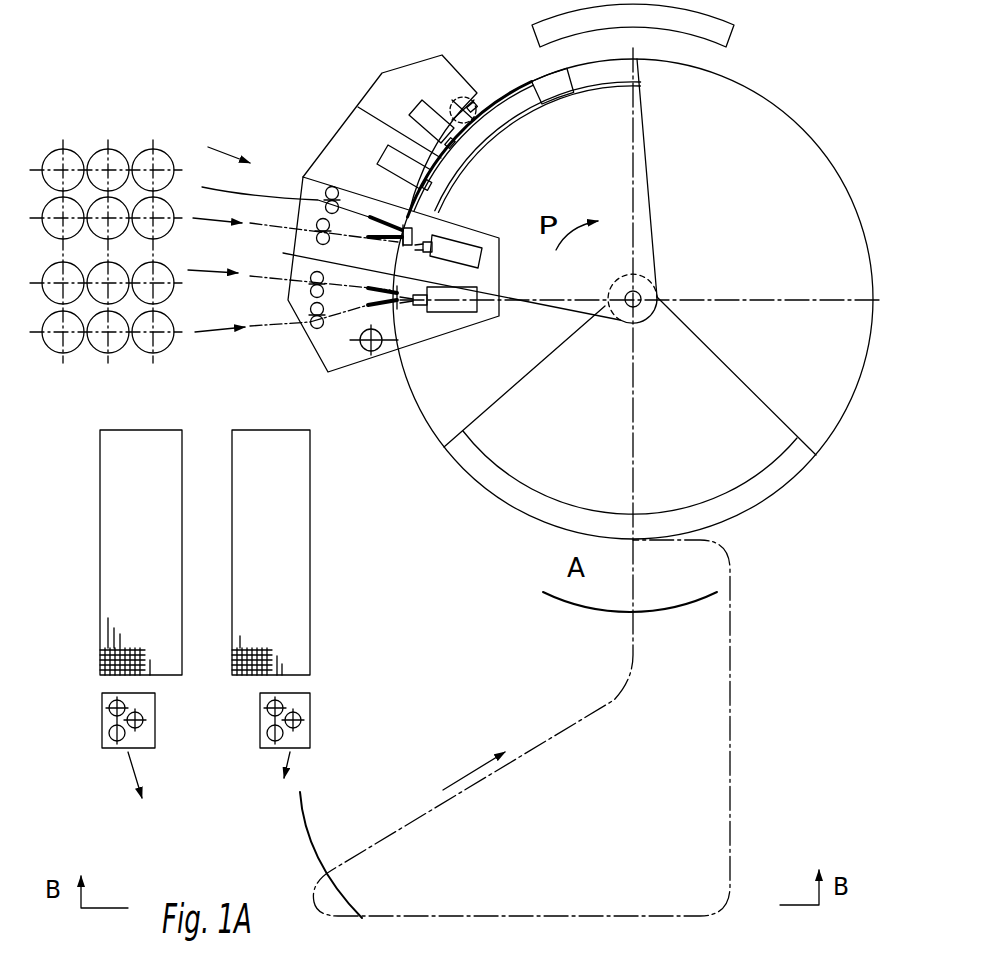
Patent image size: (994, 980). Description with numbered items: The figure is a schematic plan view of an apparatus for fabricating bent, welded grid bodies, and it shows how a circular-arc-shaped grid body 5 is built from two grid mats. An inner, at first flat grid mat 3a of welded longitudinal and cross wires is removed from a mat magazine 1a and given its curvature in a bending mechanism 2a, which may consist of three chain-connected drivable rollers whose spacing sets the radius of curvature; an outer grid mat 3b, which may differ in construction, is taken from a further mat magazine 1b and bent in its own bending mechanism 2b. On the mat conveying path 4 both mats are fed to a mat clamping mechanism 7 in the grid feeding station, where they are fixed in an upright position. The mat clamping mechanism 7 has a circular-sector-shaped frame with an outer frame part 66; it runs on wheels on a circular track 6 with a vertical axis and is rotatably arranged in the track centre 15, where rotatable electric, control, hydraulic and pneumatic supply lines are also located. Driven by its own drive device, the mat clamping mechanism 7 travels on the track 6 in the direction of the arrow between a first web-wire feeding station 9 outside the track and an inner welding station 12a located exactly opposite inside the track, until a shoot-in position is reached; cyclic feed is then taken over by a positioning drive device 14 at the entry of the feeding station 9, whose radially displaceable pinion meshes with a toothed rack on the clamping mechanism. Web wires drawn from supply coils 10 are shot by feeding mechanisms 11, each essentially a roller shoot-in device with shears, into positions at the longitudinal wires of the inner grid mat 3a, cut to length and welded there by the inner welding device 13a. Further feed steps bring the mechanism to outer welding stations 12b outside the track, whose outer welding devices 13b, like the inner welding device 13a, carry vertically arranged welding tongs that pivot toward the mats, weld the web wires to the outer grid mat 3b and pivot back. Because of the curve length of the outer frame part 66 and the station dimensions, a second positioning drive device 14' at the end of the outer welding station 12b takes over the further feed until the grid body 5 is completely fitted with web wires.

The mat magazine 1a is at (294, 570).
The further mat magazine 1b is at (120, 525).
The bending mechanism 2a is at (305, 697).
The bending mechanism 2b is at (105, 745).
The inner grid mat 3a is at (474, 156).
The outer grid mat 3b is at (520, 90).
The mat conveying path 4 is at (520, 760).
The grid body 5 is at (728, 28).
The circular track 6 is at (822, 150).
The mat clamping mechanism 7 is at (618, 165).
The outer frame part 66 is at (763, 485).
The web-wire feeding station 9 is at (330, 350).
The supply coils 10 is at (87, 193).
The feeding mechanisms 11 is at (273, 280).
The inner welding station 12a is at (435, 320).
The outer welding stations 12b is at (350, 165).
The inner welding device 13a is at (472, 258).
The outer welding devices 13b is at (390, 165).
The positioning drive device 14 is at (335, 368).
The positioning drive device 14' is at (474, 72).
The track centre 15 is at (645, 292).